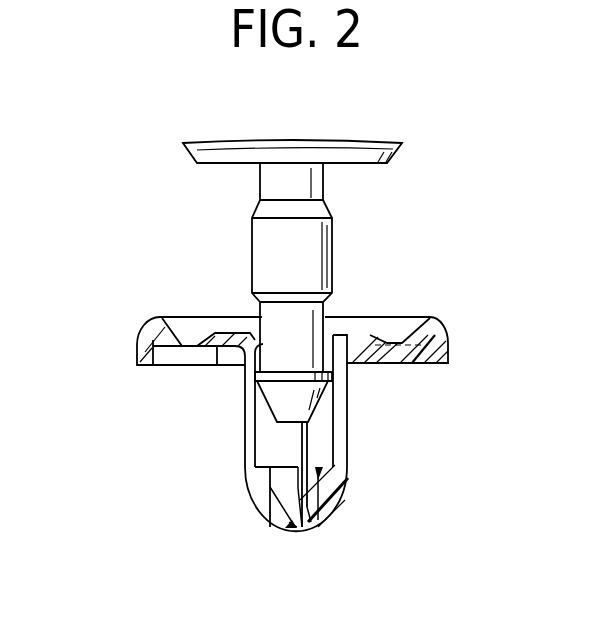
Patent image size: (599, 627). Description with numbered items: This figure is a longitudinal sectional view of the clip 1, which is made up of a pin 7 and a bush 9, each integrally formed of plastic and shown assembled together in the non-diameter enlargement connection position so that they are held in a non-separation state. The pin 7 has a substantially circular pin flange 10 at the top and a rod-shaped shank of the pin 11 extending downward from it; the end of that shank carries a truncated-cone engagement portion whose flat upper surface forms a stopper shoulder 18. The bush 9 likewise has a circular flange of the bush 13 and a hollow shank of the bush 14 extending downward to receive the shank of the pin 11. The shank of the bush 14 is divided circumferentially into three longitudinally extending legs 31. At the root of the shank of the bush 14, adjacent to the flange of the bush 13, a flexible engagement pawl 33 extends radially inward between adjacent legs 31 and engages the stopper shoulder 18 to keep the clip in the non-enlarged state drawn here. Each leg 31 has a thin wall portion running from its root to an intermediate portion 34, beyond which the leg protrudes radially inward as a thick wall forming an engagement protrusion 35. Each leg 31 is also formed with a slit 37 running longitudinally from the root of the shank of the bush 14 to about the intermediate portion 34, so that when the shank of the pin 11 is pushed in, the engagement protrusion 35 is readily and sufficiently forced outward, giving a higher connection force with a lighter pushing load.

The clip 1 is at (418, 137).
The pin 7 is at (372, 247).
The bush 9 is at (385, 442).
The pin flange 10 is at (232, 155).
The shank of the pin 11 is at (263, 265).
The flange of the bush 13 is at (140, 352).
The shank of the bush 14 is at (243, 438).
The stopper shoulder 18 is at (258, 382).
The leg 31 is at (205, 426).
The engagement pawl 33 is at (248, 318).
The intermediate portion 34 is at (245, 462).
The engagement protrusion 35 is at (263, 508).
The slit 37 is at (350, 423).